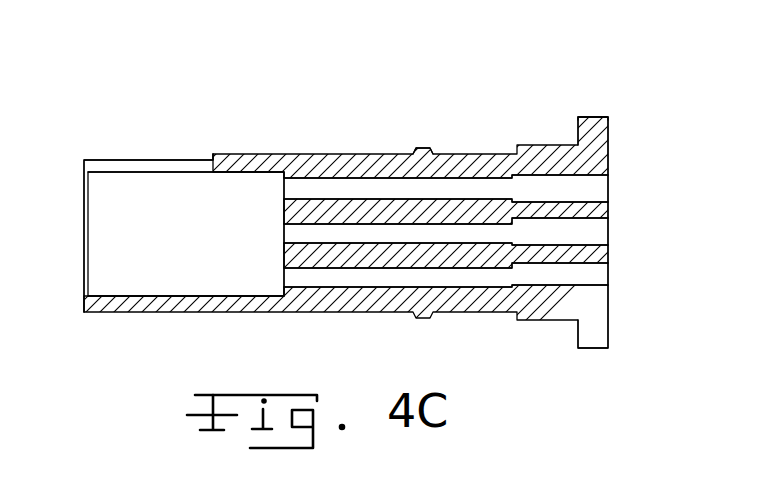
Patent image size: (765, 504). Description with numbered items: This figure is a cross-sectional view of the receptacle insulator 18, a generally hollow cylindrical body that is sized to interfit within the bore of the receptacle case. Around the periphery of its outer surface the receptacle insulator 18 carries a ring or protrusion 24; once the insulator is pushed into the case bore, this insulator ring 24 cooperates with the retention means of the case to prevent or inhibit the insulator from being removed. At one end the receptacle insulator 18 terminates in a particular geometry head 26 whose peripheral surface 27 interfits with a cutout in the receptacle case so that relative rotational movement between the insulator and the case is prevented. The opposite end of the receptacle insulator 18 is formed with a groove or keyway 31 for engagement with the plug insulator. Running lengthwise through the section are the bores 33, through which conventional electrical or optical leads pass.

The receptacle insulator 18 is at (357, 136).
The ring or protrusion 24 is at (423, 150).
The head 26 is at (598, 135).
The peripheral surface 27 is at (593, 117).
The groove or keyway 31 is at (200, 159).
The bores 33 is at (500, 180).